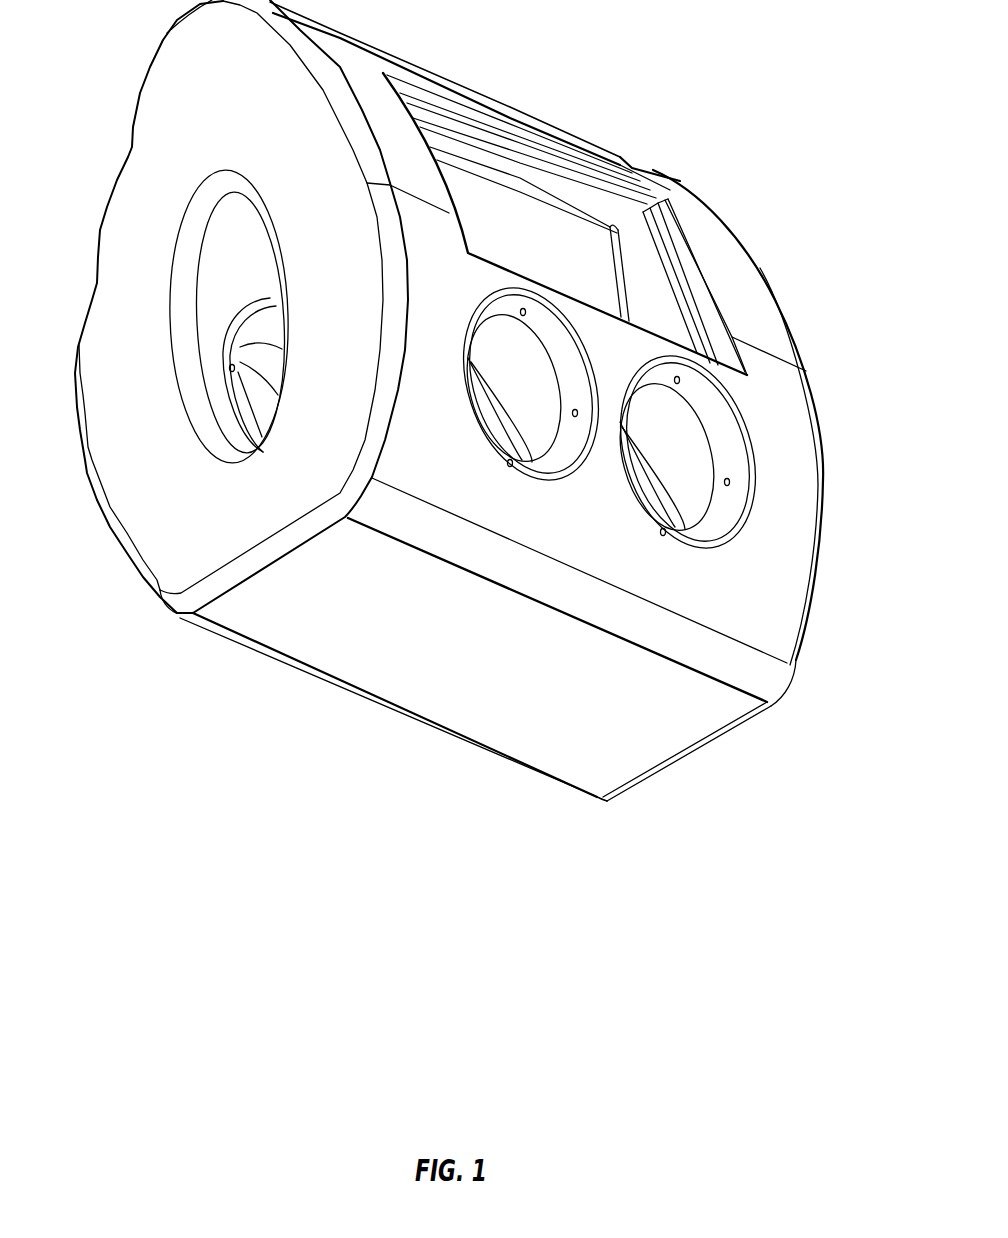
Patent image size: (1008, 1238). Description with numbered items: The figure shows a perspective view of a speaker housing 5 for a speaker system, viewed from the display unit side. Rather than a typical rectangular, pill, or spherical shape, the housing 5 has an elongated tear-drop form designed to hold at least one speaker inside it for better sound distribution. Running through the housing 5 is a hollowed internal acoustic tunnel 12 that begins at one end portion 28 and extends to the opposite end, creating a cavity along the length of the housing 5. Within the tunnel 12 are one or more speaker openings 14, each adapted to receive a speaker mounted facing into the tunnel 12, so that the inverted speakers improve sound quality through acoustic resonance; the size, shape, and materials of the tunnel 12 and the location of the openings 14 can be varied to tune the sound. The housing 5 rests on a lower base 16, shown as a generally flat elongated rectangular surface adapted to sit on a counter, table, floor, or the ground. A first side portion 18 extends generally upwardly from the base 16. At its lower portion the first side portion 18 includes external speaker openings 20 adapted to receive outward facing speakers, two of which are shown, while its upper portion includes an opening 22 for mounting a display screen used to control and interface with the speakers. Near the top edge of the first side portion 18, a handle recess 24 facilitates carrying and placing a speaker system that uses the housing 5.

The housing 5 is at (727, 147).
The internal acoustic tunnel 12 is at (227, 257).
The speaker openings 14 is at (243, 335).
The lower base 16 is at (673, 710).
The first side portion 18 is at (800, 453).
The external speaker openings 20 is at (478, 307).
The opening 22 is at (717, 287).
The handle recess 24 is at (563, 137).
The end portion 28 is at (93, 326).